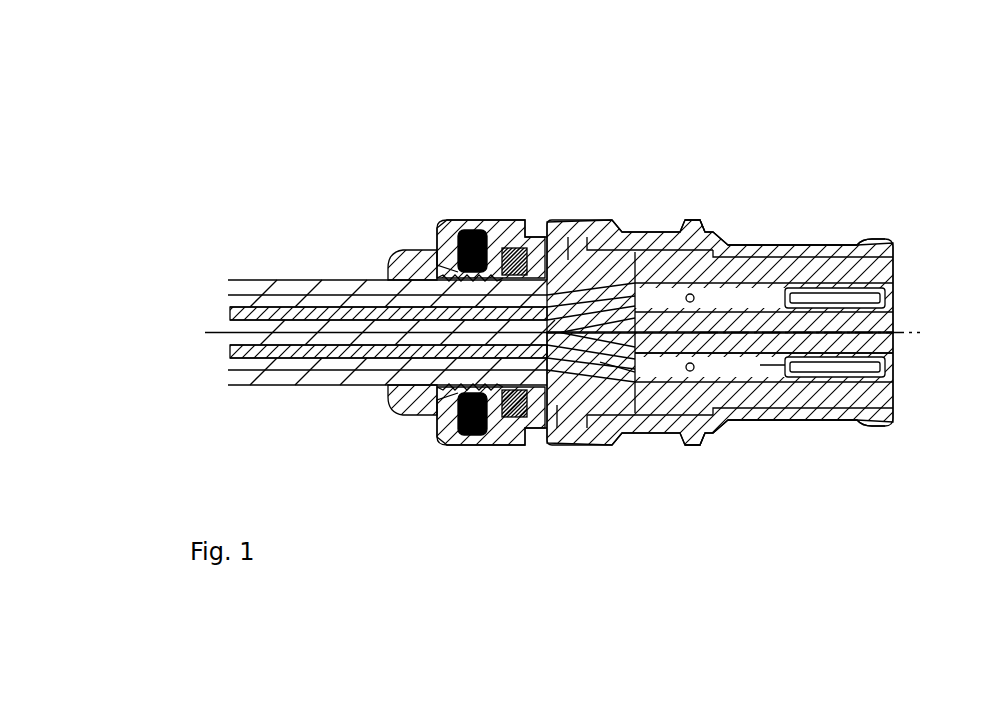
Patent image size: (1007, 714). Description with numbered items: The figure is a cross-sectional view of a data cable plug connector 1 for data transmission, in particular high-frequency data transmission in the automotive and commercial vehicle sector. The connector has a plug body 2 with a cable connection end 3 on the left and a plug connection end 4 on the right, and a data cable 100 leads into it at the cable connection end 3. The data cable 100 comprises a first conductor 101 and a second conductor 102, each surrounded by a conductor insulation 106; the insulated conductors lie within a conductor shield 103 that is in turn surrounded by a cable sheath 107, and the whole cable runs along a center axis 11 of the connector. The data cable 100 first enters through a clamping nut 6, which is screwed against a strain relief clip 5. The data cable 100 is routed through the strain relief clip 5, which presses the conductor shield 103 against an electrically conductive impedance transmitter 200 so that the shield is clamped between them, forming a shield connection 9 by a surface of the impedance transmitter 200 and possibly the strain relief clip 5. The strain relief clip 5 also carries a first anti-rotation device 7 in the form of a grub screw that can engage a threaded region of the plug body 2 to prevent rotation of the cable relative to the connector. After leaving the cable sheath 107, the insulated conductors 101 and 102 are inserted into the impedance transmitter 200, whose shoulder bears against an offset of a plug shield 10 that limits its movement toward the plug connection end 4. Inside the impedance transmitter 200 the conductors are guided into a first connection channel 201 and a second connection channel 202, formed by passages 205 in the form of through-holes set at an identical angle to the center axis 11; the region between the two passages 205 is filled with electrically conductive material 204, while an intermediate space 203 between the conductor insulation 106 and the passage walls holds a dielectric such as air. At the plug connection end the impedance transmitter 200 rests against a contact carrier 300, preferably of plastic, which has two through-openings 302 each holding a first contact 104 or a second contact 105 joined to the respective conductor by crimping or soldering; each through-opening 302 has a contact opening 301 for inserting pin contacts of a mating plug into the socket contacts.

The data cable plug connector 1 is at (603, 143).
The plug body 2 is at (695, 207).
The cable connection end 3 is at (408, 238).
The plug connection end 4 is at (862, 208).
The strain relief clip 5 is at (462, 425).
The clamping nut 6 is at (400, 258).
The first anti-rotation device 7 is at (510, 233).
The shield connection 9 is at (546, 233).
The plug shield 10 is at (757, 253).
The center axis 11 is at (210, 332).
The data cable 100 is at (267, 257).
The first conductor 101 is at (235, 308).
The second conductor 102 is at (247, 352).
The conductor shield 103 is at (343, 292).
The first contact 104 is at (780, 257).
The second contact 105 is at (765, 372).
The conductor insulation 106 is at (285, 300).
The cable sheath 107 is at (248, 380).
The impedance transmitter 200 is at (603, 233).
The first connection channel 201 is at (585, 240).
The second connection channel 202 is at (580, 392).
The intermediate space 203 is at (627, 233).
The electrically conductive material 204 is at (622, 398).
The passages 205 is at (568, 235).
The contact carrier 300 is at (717, 257).
The contact opening 301 is at (897, 298).
The through-openings 302 is at (900, 290).